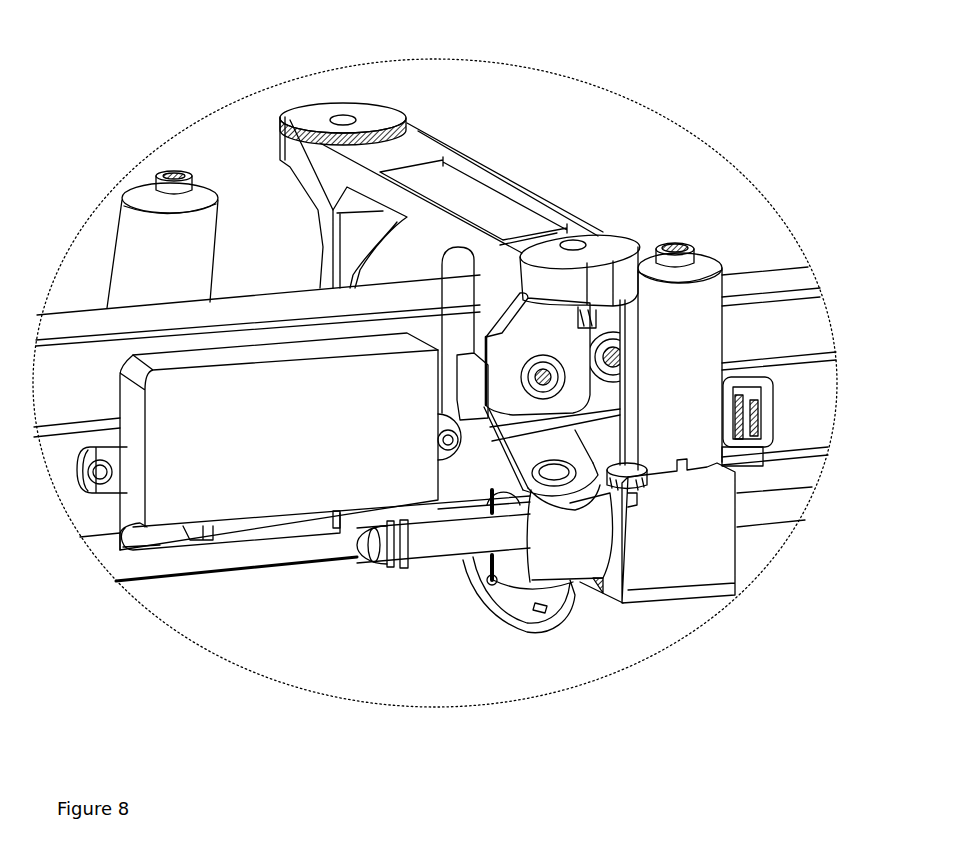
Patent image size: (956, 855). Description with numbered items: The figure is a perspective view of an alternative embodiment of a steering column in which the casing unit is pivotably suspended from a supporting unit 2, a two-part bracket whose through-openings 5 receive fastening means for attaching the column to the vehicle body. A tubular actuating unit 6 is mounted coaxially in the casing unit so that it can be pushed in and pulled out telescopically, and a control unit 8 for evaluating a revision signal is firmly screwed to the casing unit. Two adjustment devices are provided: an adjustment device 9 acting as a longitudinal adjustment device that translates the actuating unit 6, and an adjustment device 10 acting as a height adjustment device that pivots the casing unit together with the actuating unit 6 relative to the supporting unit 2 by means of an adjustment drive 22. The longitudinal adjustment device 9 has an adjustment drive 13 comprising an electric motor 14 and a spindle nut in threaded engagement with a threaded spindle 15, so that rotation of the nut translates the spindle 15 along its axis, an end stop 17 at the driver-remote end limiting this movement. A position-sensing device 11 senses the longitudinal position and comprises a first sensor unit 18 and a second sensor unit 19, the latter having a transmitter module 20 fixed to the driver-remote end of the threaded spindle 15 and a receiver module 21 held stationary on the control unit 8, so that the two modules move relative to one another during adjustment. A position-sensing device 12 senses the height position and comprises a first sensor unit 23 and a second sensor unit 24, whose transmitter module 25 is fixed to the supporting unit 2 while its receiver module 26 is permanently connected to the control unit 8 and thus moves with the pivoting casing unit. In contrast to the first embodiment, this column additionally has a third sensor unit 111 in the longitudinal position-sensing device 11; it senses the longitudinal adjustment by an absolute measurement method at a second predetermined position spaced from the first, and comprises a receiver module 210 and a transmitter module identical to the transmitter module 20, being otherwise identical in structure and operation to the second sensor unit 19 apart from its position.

The supporting unit 2 is at (306, 160).
The through-openings 5 is at (344, 116).
The actuating unit 6 is at (757, 277).
The control unit 8 is at (337, 410).
The adjustment device 9 is at (652, 736).
The adjustment device 10 is at (278, 69).
The position-sensing device 11 is at (268, 648).
The position-sensing device 12 is at (313, 63).
The adjustment drive 13 is at (667, 618).
The electric motor 14 is at (695, 345).
The threaded spindle 15 is at (427, 549).
The end stop 17 is at (404, 556).
The first sensor unit 18 is at (598, 629).
The second sensor unit 19 is at (292, 657).
The transmitter module 20 is at (390, 556).
The receiver module 21 is at (352, 522).
The adjustment drive 22 is at (109, 213).
The first sensor unit 23 is at (162, 163).
The second sensor unit 24 is at (481, 90).
The transmitter module 25 is at (470, 380).
The receiver module 26 is at (448, 368).
The third sensor unit 111 is at (150, 559).
The receiver module 210 is at (200, 533).